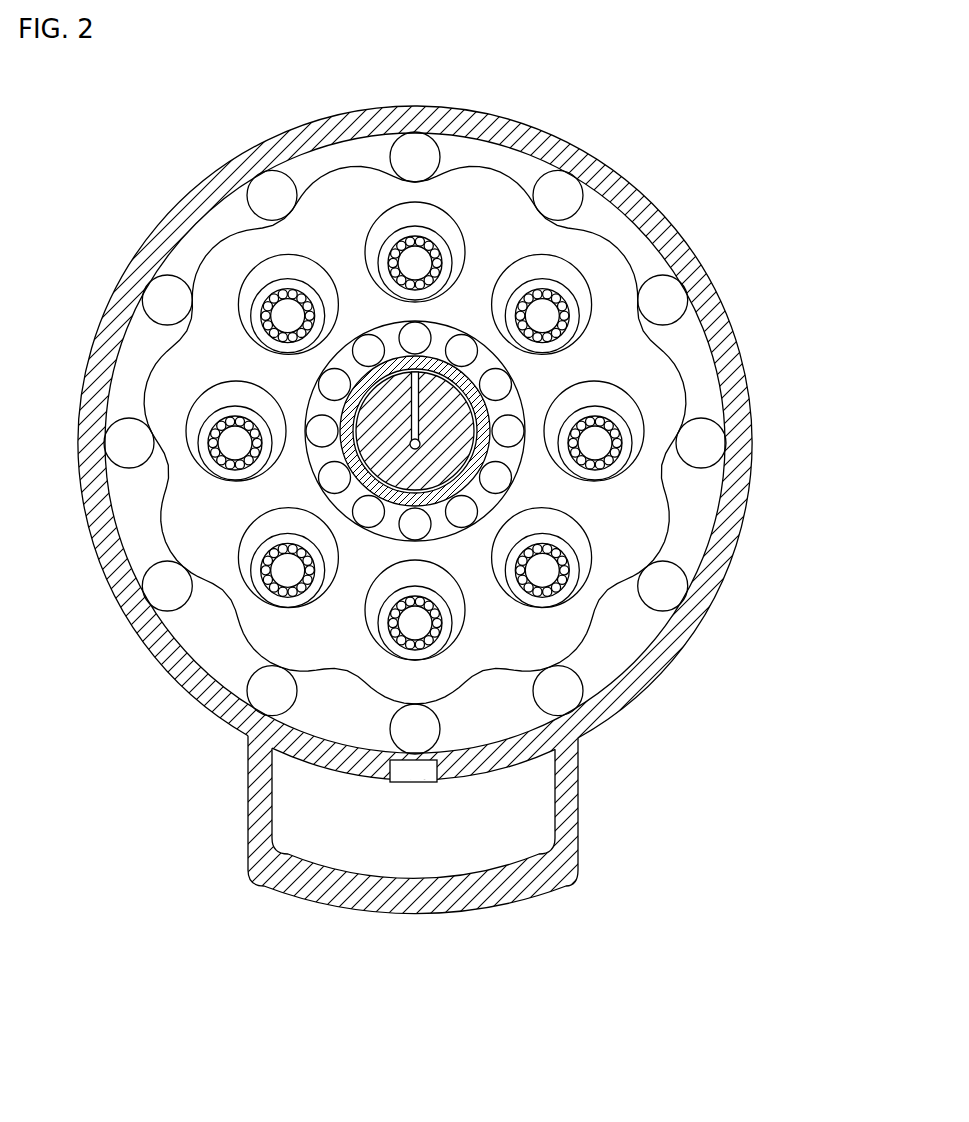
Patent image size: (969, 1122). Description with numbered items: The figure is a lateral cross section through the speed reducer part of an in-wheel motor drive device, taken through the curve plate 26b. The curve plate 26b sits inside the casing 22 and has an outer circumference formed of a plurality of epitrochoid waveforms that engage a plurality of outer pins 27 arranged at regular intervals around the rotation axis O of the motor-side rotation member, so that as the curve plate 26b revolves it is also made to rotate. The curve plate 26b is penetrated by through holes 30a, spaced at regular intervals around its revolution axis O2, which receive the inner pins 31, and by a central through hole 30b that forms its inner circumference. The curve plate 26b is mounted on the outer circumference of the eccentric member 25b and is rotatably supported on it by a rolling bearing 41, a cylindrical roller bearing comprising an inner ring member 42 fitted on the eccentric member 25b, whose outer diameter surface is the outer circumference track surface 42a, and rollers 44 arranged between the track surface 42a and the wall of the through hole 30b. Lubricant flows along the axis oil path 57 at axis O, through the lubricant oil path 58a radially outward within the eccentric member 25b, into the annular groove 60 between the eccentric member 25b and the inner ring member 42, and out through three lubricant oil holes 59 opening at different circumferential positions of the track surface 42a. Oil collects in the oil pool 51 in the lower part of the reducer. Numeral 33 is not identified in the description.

The casing 22 is at (633, 192).
The eccentric member 25b is at (447, 370).
The curve plate 26b is at (348, 181).
The outer pins 27 is at (704, 452).
The through holes 30a is at (265, 272).
The through hole 30b is at (310, 395).
The inner pins 31 is at (218, 407).
The roller bearing 33 is at (298, 478).
The rolling bearing 41 is at (330, 481).
The inner ring member 42 is at (413, 504).
The outer circumference track surface 42a is at (300, 462).
The rollers 44 is at (320, 490).
The oil pool 51 is at (532, 806).
The axis oil path 57 is at (442, 432).
The lubricant oil path 58a is at (468, 392).
The lubricant oil holes 59 is at (487, 382).
The annular groove 60 is at (402, 502).
The axis O is at (421, 446).
The revolution axis O2 is at (425, 432).